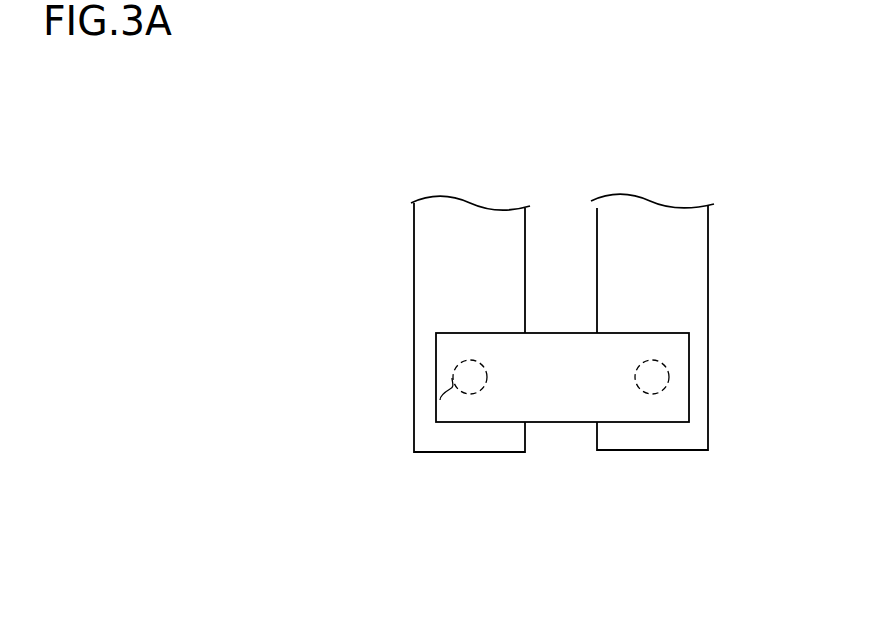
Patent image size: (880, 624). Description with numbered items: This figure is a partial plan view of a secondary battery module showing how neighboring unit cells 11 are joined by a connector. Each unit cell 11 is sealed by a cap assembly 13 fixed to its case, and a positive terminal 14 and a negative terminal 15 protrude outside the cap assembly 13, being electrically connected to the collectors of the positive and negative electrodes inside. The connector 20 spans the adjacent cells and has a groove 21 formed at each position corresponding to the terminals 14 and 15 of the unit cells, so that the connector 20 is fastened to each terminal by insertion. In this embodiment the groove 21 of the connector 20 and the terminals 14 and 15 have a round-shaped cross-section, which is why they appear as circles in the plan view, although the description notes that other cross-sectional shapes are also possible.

The unit cell 11 is at (467, 182).
The cap assembly 13 is at (427, 266).
The positive terminal 14 is at (470, 385).
The negative terminal 15 is at (650, 385).
The connector 20 is at (572, 393).
The groove 21 is at (440, 400).